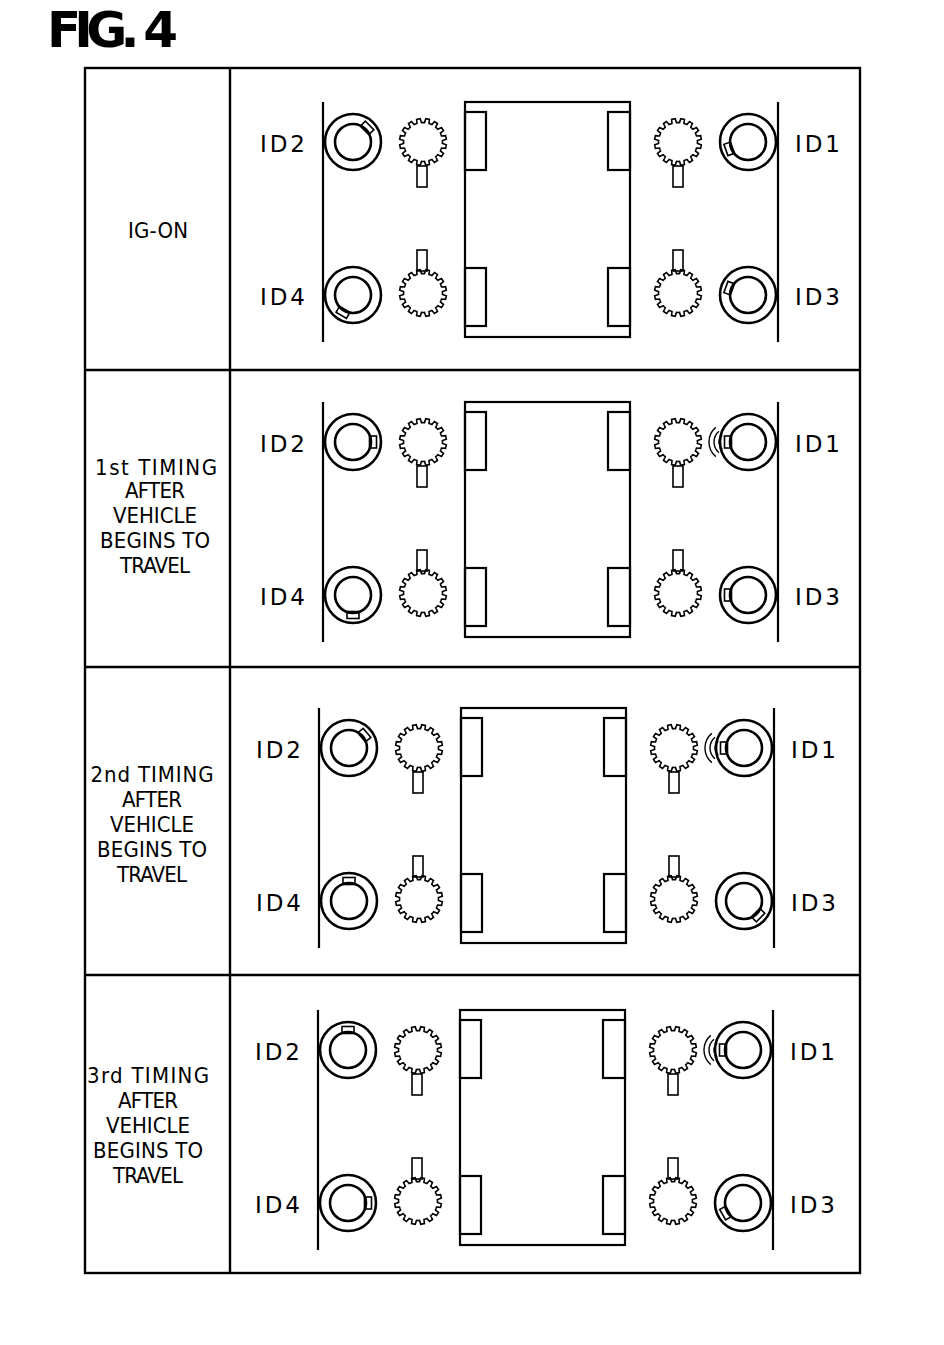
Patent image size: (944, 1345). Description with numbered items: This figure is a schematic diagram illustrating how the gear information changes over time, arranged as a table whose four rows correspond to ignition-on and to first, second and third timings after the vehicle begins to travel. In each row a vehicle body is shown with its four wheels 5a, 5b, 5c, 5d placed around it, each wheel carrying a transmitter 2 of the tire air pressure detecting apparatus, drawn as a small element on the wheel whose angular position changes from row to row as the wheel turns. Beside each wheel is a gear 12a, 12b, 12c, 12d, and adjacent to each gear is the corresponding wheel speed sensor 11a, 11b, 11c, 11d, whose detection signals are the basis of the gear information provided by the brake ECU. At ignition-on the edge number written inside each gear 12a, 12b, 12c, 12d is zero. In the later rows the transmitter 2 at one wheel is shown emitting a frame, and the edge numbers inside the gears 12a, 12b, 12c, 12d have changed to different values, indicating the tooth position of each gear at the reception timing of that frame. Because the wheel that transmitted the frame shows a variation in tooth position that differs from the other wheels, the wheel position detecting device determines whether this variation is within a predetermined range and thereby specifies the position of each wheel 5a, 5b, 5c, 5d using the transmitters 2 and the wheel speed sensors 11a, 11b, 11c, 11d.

The transmitter 2 is at (376, 136).
The wheel 5a is at (744, 114).
The wheel 5b is at (352, 114).
The wheel 5c is at (748, 268).
The wheel 5d is at (352, 268).
The wheel speed sensor 11a is at (683, 180).
The wheel speed sensor 11b is at (417, 180).
The wheel speed sensor 11c is at (673, 258).
The wheel speed sensor 11d is at (417, 258).
The gear 12a is at (663, 124).
The gear 12b is at (427, 119).
The gear 12c is at (668, 316).
The gear 12d is at (421, 316).